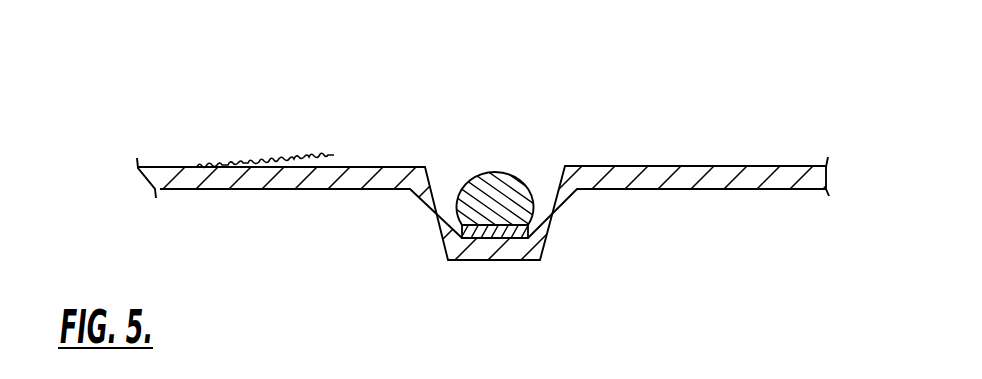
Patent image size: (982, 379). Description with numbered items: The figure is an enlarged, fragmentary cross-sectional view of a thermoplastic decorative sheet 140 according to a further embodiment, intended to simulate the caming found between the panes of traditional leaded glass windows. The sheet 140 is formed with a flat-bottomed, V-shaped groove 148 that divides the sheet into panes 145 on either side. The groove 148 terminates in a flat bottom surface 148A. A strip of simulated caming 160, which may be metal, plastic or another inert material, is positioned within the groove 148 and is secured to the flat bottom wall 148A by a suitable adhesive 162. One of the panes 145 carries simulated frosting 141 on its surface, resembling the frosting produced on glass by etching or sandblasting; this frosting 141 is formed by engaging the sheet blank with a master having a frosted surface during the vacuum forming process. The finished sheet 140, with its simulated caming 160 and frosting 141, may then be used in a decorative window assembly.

The thermoplastic decorative sheet 140 is at (728, 92).
The simulated frosting 141 is at (283, 167).
The panes 145 is at (365, 167).
The flat bottomed V-shaped groove 148 is at (455, 168).
The flat bottom surface 148A is at (506, 238).
The simulated caming strip 160 is at (510, 185).
The adhesive 162 is at (474, 238).